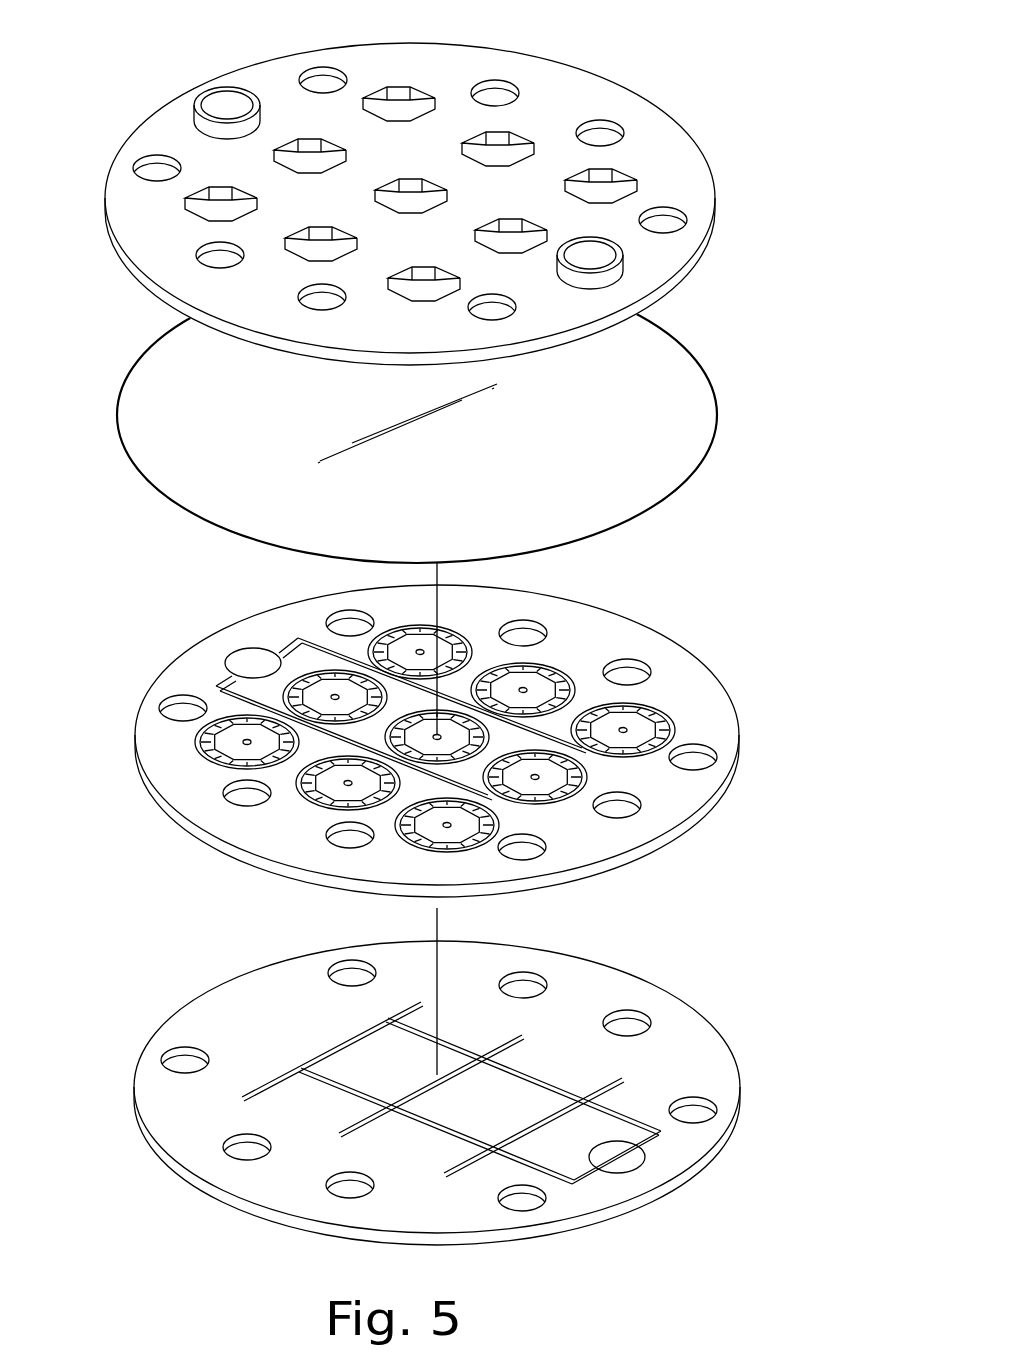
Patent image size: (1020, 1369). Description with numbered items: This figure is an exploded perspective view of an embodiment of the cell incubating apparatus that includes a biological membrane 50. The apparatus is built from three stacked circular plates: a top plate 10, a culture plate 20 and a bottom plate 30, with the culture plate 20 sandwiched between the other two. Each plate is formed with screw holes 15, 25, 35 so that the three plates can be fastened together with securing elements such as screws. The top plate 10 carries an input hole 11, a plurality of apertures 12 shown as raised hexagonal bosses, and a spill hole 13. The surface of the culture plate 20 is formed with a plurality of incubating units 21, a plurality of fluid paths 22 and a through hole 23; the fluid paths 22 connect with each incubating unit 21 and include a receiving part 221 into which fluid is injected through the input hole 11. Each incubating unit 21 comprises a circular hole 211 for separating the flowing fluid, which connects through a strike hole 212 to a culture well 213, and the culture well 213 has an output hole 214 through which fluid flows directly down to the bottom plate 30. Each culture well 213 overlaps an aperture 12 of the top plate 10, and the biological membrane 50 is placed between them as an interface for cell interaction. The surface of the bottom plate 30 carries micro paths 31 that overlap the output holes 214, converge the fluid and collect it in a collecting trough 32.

The top plate 10 is at (450, 68).
The input hole 11 is at (231, 97).
The aperture 12 is at (390, 110).
The spill hole 13 is at (604, 258).
The screw hole 15 is at (597, 128).
The biological membrane 50 is at (710, 415).
The culture plate 20 is at (188, 665).
The incubating unit 21 is at (182, 799).
The fluid path 22 is at (312, 640).
The through hole 23 is at (632, 807).
The screw hole 25 is at (635, 668).
The circular hole 211 is at (222, 758).
The strike hole 212 is at (235, 772).
The culture well 213 is at (212, 742).
The output hole 214 is at (246, 747).
The receiving part 221 is at (242, 660).
The bottom plate 30 is at (215, 1002).
The micro path 31 is at (262, 1082).
The collecting trough 32 is at (625, 1160).
The screw hole 35 is at (640, 1022).